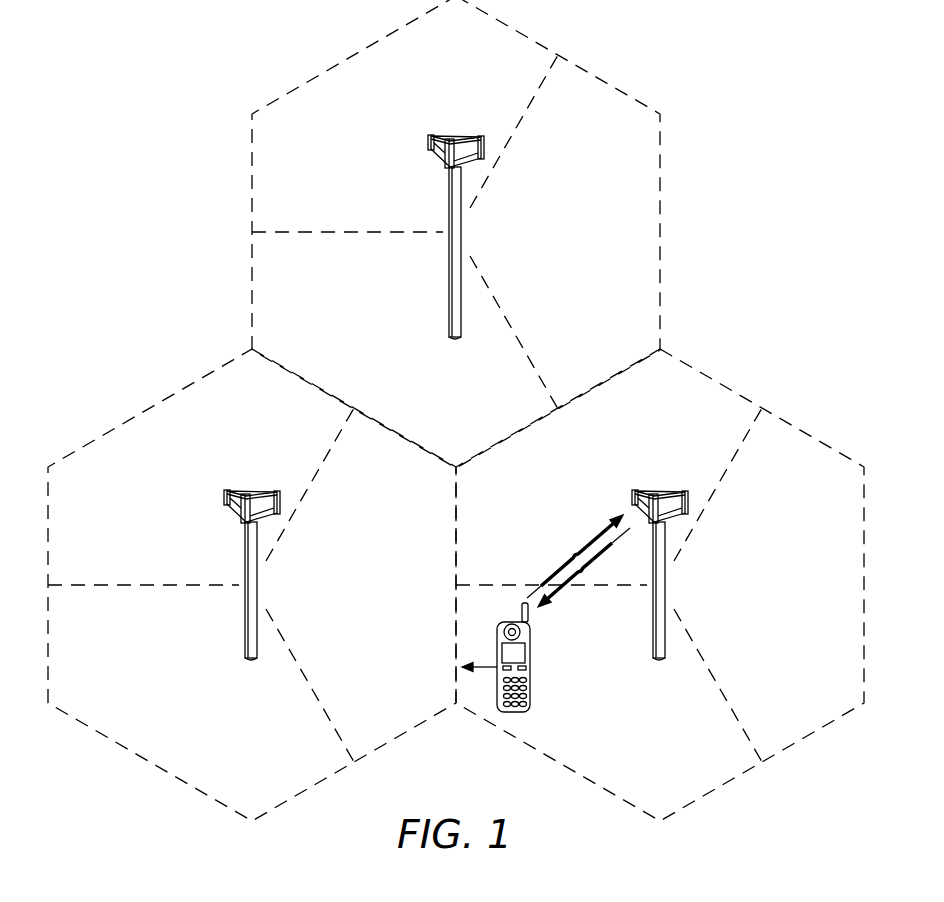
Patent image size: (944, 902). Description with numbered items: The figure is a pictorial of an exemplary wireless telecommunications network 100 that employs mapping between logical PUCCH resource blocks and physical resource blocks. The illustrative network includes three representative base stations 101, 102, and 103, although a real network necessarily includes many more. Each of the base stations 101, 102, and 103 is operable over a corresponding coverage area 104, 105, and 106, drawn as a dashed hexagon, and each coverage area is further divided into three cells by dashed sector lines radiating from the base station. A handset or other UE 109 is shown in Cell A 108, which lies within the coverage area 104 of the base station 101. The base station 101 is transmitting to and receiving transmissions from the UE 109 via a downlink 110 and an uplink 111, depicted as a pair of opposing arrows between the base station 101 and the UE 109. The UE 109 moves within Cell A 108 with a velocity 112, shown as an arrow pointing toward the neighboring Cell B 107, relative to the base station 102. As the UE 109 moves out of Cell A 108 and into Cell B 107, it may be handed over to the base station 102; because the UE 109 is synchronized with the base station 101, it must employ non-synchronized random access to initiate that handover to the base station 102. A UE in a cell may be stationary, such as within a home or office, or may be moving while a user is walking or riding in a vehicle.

The wireless telecommunications network 100 is at (140, 80).
The base station 101 is at (667, 587).
The base station 102 is at (245, 619).
The base station 103 is at (449, 264).
The coverage area 104 is at (800, 742).
The coverage area 105 is at (148, 765).
The coverage area 106 is at (660, 232).
The Cell B 107 is at (408, 700).
The Cell A 108 is at (666, 777).
The UE 109 is at (530, 673).
The downlink 110 is at (582, 572).
The uplink 111 is at (592, 538).
The velocity 112 is at (488, 667).